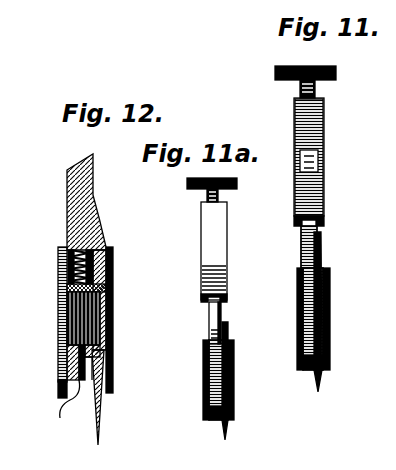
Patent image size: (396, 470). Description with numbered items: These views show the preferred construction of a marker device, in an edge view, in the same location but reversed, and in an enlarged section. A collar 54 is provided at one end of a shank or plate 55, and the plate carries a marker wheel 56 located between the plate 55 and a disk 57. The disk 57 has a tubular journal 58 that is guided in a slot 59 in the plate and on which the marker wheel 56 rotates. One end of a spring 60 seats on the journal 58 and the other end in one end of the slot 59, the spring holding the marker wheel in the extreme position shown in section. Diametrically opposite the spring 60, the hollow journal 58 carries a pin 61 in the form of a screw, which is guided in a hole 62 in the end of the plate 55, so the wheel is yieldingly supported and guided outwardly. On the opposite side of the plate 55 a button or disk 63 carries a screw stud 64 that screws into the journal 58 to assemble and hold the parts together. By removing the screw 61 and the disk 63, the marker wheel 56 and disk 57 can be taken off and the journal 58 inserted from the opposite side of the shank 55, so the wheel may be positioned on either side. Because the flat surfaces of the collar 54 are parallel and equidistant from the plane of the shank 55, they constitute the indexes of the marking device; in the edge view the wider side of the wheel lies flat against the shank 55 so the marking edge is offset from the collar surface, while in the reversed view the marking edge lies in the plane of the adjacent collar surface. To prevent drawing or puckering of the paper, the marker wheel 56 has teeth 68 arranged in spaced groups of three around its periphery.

In FIG. 11A, the collar 54 is at (210, 232).
In FIG. 11, the collar 54 is at (295, 122).
In FIG. 12, the shank or plate 55 is at (71, 252).
In FIG. 11A, the shank or plate 55 is at (210, 320).
In FIG. 11, the shank or plate 55 is at (301, 236).
In FIG. 12, the marker wheel 56 is at (103, 420).
In FIG. 11A, the marker wheel 56 is at (231, 428).
In FIG. 11, the marker wheel 56 is at (322, 378).
In FIG. 12, the disk 57 is at (113, 275).
In FIG. 11A, the disk 57 is at (234, 350).
In FIG. 11, the disk 57 is at (330, 283).
In FIG. 12, the tubular journal 58 is at (113, 290).
In FIG. 12, the slot 59 is at (72, 264).
In FIG. 12, the spring 60 is at (80, 268).
In FIG. 12, the pin 61 is at (68, 362).
In FIG. 12, the hole 62 is at (63, 411).
In FIG. 12, the button or disk 63 is at (70, 285).
In FIG. 11A, the button or disk 63 is at (209, 362).
In FIG. 11, the button or disk 63 is at (297, 298).
In FIG. 12, the screw stud 64 is at (75, 315).
In FIG. 12, the teeth 68 is at (73, 453).